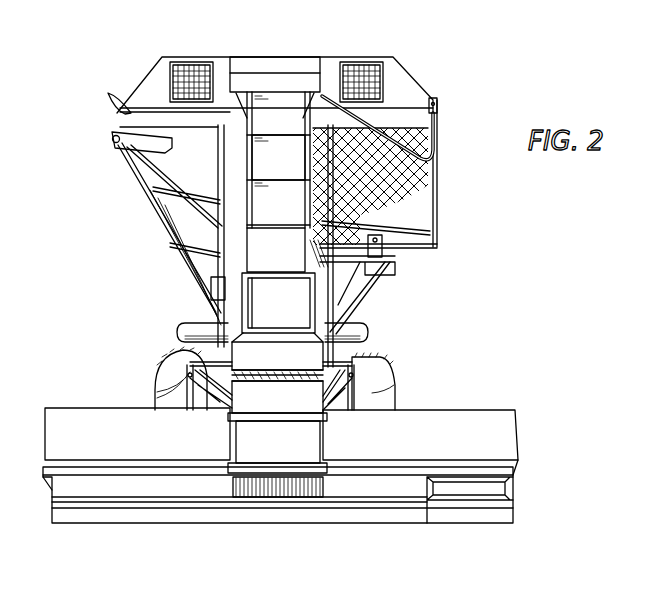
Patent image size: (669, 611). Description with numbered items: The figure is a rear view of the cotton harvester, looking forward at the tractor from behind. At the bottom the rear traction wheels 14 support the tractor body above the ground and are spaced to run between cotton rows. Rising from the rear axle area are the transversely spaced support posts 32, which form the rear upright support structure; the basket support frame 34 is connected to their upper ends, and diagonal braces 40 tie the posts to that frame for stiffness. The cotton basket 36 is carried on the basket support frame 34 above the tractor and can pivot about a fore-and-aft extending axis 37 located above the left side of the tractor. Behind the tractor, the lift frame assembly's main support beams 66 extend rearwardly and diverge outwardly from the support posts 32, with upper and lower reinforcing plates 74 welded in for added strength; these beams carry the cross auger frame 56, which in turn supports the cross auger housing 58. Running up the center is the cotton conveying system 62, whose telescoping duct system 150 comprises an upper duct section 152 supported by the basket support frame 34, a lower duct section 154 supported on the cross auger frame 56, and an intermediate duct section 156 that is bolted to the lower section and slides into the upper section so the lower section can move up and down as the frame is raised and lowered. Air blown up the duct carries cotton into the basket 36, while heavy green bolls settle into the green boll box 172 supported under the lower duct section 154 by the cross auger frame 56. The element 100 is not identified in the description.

The cotton basket 36 is at (442, 84).
The fore-and-aft extending axis 37 is at (110, 136).
The telescoping duct system 150 is at (238, 220).
The upper duct section 152 is at (290, 170).
The intermediate duct section 156 is at (290, 262).
The lower duct section 154 is at (283, 364).
The support posts 32 is at (214, 298).
The diagonal braces 40 is at (356, 270).
The basket support frame 34 is at (385, 252).
The rear traction wheels 14 is at (162, 360).
The tire 100 is at (170, 378).
The upper and lower reinforcing plates 74 is at (180, 396).
The main support beams 66 is at (210, 404).
The cotton conveying system 62 is at (137, 377).
The cross auger housing 58 is at (462, 436).
The cross auger frame 56 is at (517, 491).
The green boll box 172 is at (205, 490).